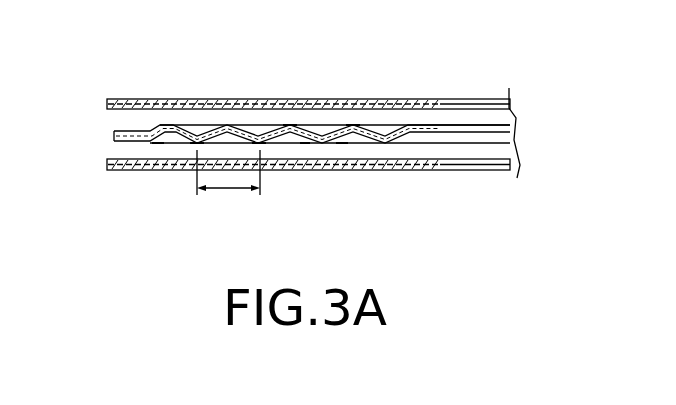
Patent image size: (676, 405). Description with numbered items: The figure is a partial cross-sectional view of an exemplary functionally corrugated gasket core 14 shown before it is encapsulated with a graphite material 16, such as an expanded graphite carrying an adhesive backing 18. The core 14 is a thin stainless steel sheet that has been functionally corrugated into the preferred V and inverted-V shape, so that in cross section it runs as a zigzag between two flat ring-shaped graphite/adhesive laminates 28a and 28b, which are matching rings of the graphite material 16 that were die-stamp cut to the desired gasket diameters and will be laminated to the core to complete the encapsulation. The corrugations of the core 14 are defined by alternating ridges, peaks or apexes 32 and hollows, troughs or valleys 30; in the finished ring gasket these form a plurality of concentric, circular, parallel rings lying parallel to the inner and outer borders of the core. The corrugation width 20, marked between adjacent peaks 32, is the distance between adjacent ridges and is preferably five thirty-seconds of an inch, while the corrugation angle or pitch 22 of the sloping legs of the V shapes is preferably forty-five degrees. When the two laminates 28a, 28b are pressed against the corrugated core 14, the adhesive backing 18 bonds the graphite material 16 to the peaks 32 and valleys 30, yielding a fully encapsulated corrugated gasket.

The gasket core 14 is at (465, 118).
The graphite material 16 is at (164, 92).
The adhesive backing 18 is at (120, 110).
The corrugation width 20 is at (228, 190).
The corrugation angle 22 is at (158, 143).
The graphite/adhesive laminate 28a is at (98, 103).
The graphite/adhesive laminate 28b is at (98, 165).
The valleys 30 is at (197, 141).
The peaks 32 is at (290, 125).